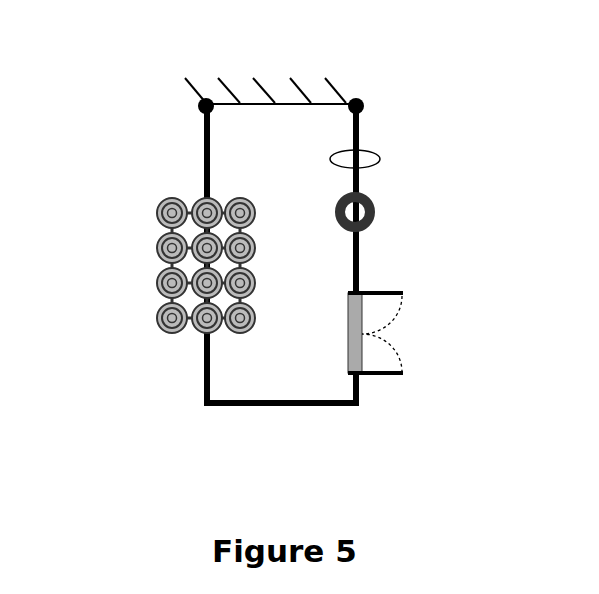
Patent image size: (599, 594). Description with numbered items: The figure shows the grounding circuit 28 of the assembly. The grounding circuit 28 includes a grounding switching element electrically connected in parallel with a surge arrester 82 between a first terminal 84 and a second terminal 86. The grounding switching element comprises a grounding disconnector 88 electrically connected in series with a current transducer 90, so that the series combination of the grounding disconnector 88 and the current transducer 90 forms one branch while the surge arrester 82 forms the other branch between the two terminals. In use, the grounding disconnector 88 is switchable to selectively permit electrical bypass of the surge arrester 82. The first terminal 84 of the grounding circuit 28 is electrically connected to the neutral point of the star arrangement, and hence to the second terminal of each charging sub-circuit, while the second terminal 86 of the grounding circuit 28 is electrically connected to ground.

The grounding circuit 28 is at (151, 164).
The surge arrester 82 is at (143, 265).
The first terminal 84 is at (267, 418).
The second terminal 86 is at (186, 101).
The grounding disconnector 88 is at (400, 333).
The current transducer 90 is at (387, 160).